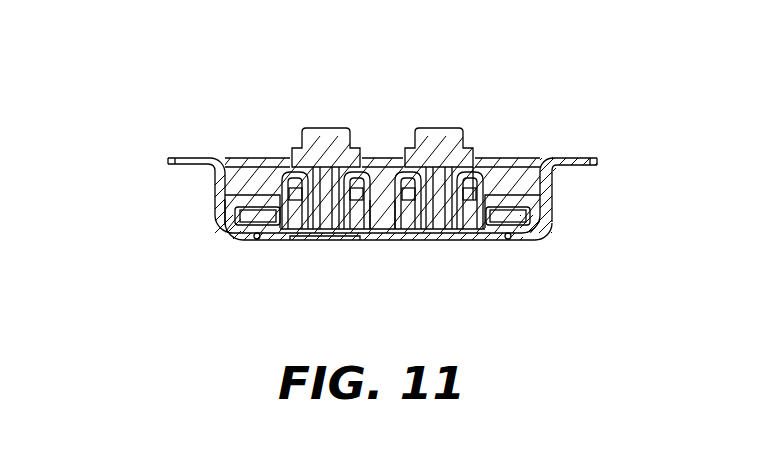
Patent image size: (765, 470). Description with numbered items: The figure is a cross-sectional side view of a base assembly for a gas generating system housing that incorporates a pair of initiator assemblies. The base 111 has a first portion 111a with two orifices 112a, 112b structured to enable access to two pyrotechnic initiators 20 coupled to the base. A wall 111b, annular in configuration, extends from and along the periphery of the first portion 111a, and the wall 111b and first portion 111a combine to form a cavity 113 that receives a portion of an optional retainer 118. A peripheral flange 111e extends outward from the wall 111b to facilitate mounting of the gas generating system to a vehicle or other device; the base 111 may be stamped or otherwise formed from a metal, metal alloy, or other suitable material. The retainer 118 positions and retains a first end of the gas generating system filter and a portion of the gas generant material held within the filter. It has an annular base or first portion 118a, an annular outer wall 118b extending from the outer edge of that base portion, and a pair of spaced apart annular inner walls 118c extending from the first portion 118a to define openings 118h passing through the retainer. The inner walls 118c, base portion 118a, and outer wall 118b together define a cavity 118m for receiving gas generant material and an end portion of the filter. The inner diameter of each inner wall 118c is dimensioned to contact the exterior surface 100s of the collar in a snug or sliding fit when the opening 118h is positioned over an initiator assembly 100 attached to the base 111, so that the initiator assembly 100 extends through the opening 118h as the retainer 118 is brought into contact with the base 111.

The pyrotechnic initiator 20 is at (304, 127).
The initiator assembly 100 is at (426, 174).
The exterior surface of collar 100s is at (478, 206).
The base 111 is at (373, 222).
The first portion 111a is at (516, 240).
The wall 111b is at (215, 195).
The peripheral flange 111e is at (573, 158).
The orifice 112a is at (324, 238).
The orifice 112b is at (438, 238).
The cavity 113 is at (259, 158).
The retainer 118 is at (368, 214).
The annular base or first portion 118a is at (510, 227).
The annular outer wall 118b is at (228, 214).
The annular inner walls 118c is at (378, 222).
The openings 118h is at (279, 227).
The cavity 118m is at (262, 217).